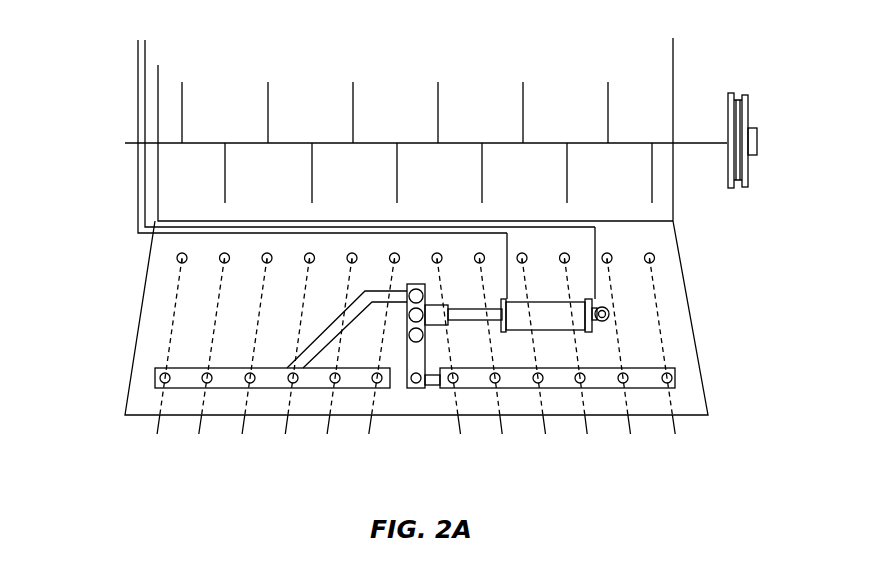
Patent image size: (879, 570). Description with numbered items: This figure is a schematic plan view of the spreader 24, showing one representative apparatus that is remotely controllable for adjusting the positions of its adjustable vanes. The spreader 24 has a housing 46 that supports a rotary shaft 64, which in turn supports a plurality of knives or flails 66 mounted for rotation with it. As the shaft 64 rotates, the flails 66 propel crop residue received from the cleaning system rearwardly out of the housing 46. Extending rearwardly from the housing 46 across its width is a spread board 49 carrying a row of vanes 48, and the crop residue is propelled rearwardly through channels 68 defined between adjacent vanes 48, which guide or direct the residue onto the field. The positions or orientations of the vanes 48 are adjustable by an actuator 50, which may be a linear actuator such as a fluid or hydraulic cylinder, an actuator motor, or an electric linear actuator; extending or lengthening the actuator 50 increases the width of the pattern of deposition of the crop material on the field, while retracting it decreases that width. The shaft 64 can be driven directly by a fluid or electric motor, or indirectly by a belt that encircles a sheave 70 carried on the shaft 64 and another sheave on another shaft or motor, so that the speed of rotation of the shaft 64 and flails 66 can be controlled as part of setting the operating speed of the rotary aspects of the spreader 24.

The spreader 24 is at (118, 112).
The housing 46 is at (674, 200).
The vanes 48 is at (197, 420).
The spread board 49 is at (690, 297).
The actuator 50 is at (562, 332).
The rotary shaft 64 is at (694, 141).
The knives or flails 66 is at (182, 97).
The channels 68 is at (135, 423).
The sheave 70 is at (745, 103).